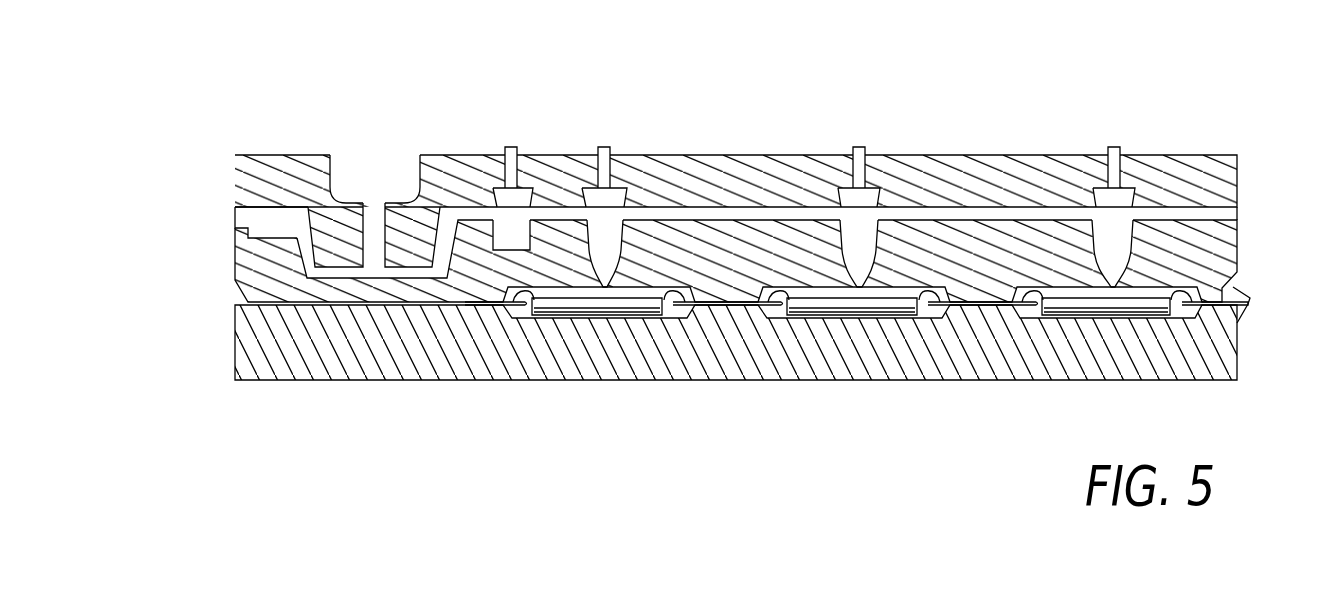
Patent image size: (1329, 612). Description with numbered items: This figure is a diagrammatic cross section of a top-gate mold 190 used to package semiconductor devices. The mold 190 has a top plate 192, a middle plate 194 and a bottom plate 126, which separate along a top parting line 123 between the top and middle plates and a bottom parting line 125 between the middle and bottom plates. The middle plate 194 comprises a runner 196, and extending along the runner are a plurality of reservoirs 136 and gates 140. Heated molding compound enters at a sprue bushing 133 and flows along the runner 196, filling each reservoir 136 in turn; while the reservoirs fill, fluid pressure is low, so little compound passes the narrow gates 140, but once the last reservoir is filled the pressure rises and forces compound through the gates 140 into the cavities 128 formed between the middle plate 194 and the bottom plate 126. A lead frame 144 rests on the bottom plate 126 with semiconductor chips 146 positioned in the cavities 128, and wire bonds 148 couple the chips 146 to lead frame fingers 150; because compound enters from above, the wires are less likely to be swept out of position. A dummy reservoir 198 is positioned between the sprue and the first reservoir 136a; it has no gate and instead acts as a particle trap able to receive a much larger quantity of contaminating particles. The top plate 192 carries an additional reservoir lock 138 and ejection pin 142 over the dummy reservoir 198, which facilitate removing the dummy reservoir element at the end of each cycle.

The mold 190 is at (1030, 64).
The top parting line 123 is at (231, 208).
The top plate 192 is at (236, 174).
The sprue bushing 133 is at (373, 218).
The ejection pin 142 is at (512, 160).
The reservoir lock 138 is at (522, 200).
The runner 196 is at (262, 218).
The gate 140 is at (1190, 217).
The bottom parting line 125 is at (238, 303).
The middle plate 194 is at (232, 279).
The dummy reservoir 198 is at (505, 237).
The first reservoir 136a is at (608, 235).
The reservoir 136 is at (1100, 250).
The bottom plate 126 is at (275, 359).
The lead frame 144 is at (718, 307).
The semiconductor chip 146 is at (870, 302).
The cavity 128 is at (515, 312).
The lead frame finger 150 is at (1180, 302).
The wire bond 148 is at (1220, 268).